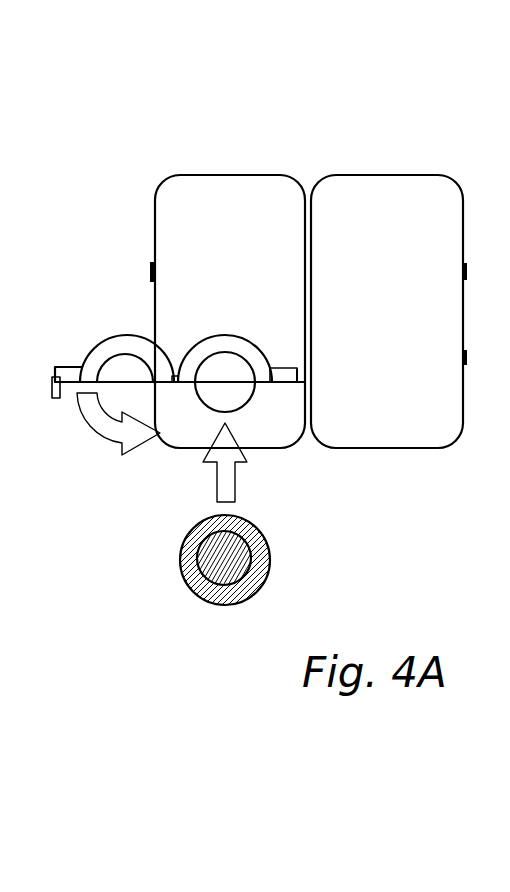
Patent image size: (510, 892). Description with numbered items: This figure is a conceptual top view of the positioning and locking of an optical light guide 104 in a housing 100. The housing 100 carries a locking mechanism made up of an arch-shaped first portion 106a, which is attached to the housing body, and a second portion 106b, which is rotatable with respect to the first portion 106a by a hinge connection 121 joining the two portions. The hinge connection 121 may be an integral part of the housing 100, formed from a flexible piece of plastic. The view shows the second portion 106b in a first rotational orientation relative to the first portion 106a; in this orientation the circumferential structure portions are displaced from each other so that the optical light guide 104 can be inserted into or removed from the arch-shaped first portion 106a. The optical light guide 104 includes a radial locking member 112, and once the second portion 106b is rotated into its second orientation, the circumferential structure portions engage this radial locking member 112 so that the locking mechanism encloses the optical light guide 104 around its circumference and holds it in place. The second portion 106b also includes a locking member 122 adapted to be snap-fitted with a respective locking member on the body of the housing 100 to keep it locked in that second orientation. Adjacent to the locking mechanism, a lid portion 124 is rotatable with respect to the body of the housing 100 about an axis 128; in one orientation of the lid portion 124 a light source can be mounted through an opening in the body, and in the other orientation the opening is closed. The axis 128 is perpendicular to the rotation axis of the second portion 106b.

The housing 100 is at (354, 122).
The lid portion 124 is at (427, 188).
The axis 128 is at (150, 272).
The second portion of the locking mechanism 106b is at (118, 345).
The first portion of the locking mechanism 106a is at (213, 345).
The locking member 122 is at (56, 398).
The hinge connection 121 is at (176, 355).
The radial locking member 112 is at (228, 604).
The optical light guide 104 is at (253, 563).